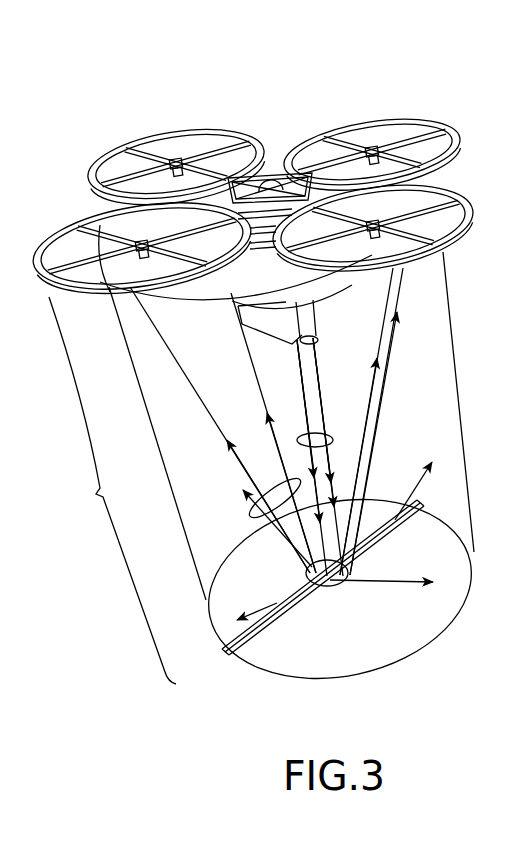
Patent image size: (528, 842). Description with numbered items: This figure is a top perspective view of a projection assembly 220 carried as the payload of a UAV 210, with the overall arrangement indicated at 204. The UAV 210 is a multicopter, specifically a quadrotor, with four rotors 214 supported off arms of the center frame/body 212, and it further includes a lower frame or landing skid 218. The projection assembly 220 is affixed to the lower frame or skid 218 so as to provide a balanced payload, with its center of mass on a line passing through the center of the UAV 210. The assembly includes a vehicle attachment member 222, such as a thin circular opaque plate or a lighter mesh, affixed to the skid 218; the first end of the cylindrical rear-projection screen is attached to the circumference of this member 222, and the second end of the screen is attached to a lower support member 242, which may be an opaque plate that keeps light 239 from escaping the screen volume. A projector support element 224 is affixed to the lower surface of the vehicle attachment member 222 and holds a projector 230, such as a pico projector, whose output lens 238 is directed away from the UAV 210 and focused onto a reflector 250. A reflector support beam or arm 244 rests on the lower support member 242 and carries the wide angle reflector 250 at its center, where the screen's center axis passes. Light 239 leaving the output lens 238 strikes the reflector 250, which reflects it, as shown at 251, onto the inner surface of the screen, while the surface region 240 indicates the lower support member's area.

The unmanned aerial vehicle 204 is at (93, 138).
The UAV 210 is at (165, 118).
The center frame/body 212 is at (277, 147).
The rotors 214 is at (82, 245).
The lower frame or landing skid 218 is at (258, 266).
The projection assembly 220 is at (112, 490).
The vehicle attachment member 222 is at (183, 293).
The projector support element 224 is at (330, 294).
The projector 230 is at (268, 340).
The output lens 238 is at (316, 344).
The light 239 is at (333, 440).
The ground surface 240 is at (273, 680).
The lower support member 242 is at (362, 676).
The reflector support beam or arm 244 is at (229, 656).
The reflector 250 is at (333, 585).
The reflected light 251 is at (256, 508).